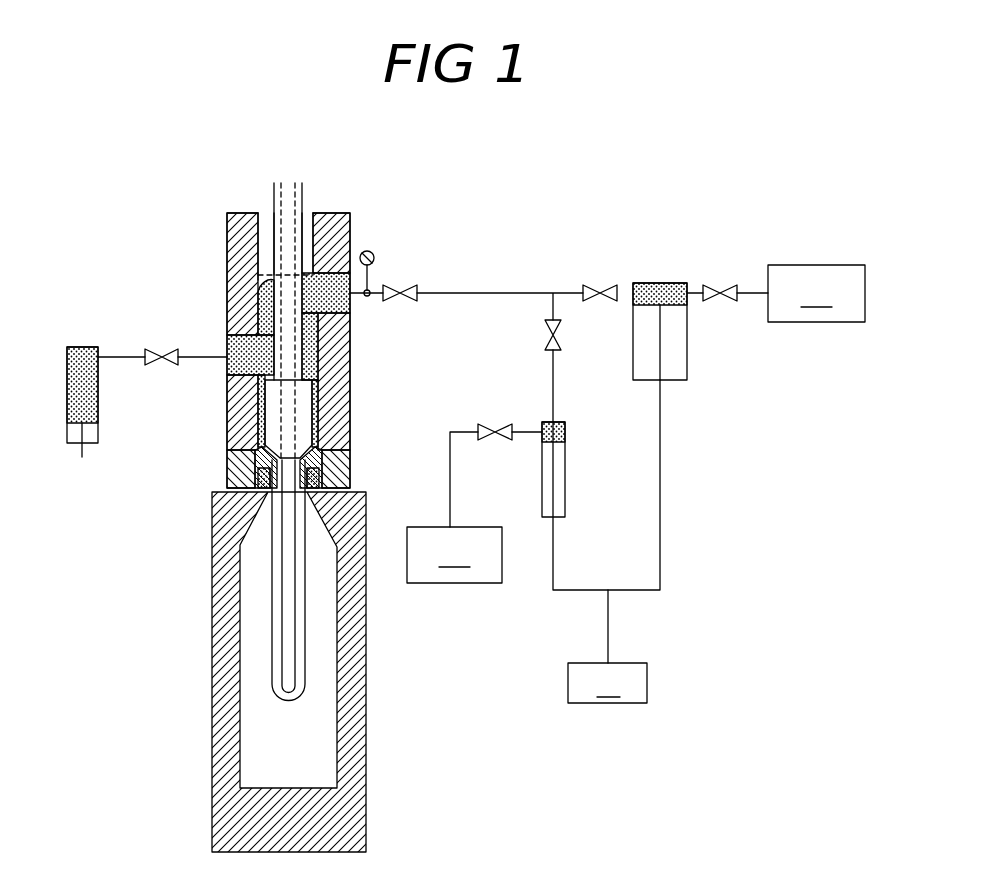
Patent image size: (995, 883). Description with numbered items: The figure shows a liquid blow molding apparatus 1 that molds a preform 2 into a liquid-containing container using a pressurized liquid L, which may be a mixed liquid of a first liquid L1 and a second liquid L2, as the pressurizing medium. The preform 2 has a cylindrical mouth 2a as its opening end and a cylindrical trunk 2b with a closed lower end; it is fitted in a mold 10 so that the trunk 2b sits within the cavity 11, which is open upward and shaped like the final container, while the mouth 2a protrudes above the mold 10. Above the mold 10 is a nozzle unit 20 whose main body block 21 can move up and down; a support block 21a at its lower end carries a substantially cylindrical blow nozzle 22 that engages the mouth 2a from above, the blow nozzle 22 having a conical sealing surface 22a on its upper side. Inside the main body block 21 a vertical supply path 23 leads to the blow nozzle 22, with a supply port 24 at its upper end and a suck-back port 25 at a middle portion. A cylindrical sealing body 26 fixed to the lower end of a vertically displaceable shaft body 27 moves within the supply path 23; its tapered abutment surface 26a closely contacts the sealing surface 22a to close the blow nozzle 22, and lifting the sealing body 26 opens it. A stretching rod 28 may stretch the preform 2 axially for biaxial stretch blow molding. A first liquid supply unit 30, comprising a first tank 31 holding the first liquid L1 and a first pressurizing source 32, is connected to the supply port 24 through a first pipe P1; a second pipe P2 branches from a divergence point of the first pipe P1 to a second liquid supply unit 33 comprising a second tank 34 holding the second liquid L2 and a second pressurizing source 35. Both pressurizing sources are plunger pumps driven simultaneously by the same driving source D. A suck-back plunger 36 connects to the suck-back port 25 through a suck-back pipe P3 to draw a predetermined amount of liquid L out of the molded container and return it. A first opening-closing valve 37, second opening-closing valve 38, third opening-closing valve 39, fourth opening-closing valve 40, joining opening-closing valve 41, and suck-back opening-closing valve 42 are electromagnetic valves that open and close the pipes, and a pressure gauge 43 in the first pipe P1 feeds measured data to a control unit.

The liquid blow molding apparatus 1 is at (500, 178).
The preform 2 is at (305, 622).
The mouth 2a is at (258, 475).
The trunk 2b is at (305, 650).
The mold 10 is at (366, 713).
The cavity 11 is at (337, 745).
The nozzle unit 20 is at (241, 328).
The main body block 21 is at (232, 240).
The support block 21a is at (235, 462).
The blow nozzle 22 is at (322, 458).
The sealing surface 22a is at (268, 455).
The supply path 23 is at (312, 340).
The supply port 24 is at (350, 313).
The suck-back port 25 is at (227, 345).
The sealing body 26 is at (302, 410).
The abutment surface 26a is at (275, 462).
The shaft body 27 is at (270, 200).
The stretching rod 28 is at (288, 580).
The first liquid supply unit 30 is at (749, 286).
The first tank 31 is at (816, 293).
The first pressurizing source 32 is at (687, 345).
The second liquid supply unit 33 is at (515, 514).
The second tank 34 is at (454, 555).
The second pressurizing source 35 is at (565, 478).
The suck-back plunger 36 is at (67, 435).
The first opening-closing valve 37 is at (715, 300).
The second opening-closing valve 38 is at (600, 287).
The third opening-closing valve 39 is at (500, 440).
The fourth opening-closing valve 40 is at (545, 335).
The joining opening-closing valve 41 is at (413, 287).
The suck-back opening-closing valve 42 is at (162, 350).
The pressure gauge 43 is at (372, 253).
The liquid L is at (312, 367).
The first liquid L1 is at (657, 283).
The second liquid L2 is at (565, 432).
The first pipe P1 is at (553, 291).
The second pipe P2 is at (553, 380).
The suck-back pipe P3 is at (118, 357).
The driving source D is at (607, 646).